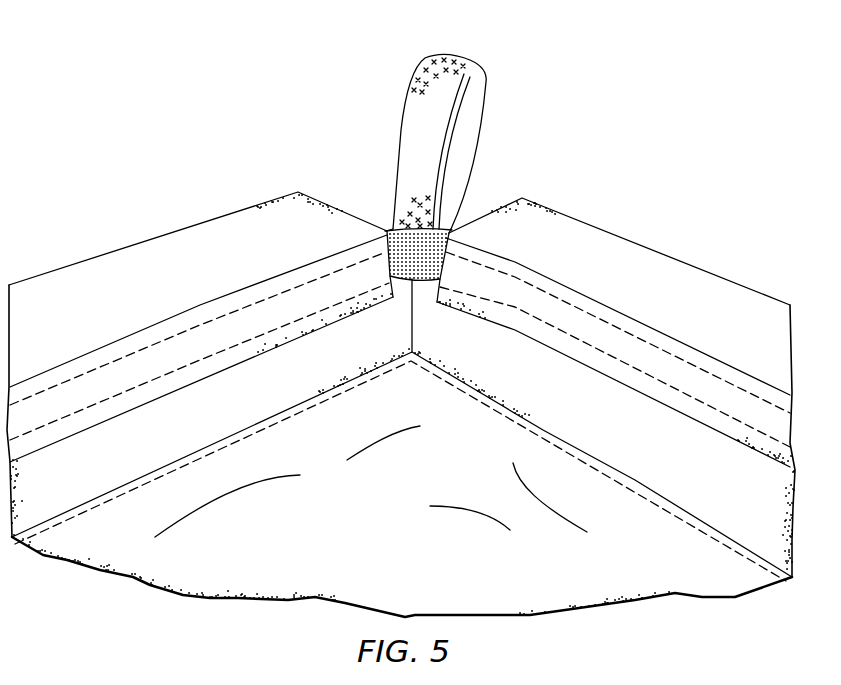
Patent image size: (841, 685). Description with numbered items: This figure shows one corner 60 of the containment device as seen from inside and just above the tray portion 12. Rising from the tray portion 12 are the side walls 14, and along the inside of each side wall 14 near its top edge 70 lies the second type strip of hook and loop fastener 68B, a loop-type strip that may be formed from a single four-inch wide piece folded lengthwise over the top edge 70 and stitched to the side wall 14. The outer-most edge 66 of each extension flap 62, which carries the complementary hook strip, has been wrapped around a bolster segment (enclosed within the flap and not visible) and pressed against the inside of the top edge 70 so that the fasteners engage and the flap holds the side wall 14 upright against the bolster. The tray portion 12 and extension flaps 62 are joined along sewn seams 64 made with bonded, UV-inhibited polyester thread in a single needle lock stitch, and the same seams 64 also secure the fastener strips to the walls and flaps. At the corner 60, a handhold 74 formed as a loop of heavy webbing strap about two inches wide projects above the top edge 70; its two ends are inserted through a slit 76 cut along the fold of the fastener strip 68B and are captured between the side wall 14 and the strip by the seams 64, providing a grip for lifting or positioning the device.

The tray portion 12 is at (421, 567).
The side wall 14 is at (103, 480).
The corner 60 is at (411, 322).
The extension flap 62 is at (173, 233).
The sewn seams 64 is at (163, 338).
The outer-most edge 66 is at (232, 367).
The second type strip of hook and loop fastener 68B is at (428, 262).
The top edge 70 is at (388, 230).
The handhold 74 is at (403, 110).
The slit 76 is at (413, 208).